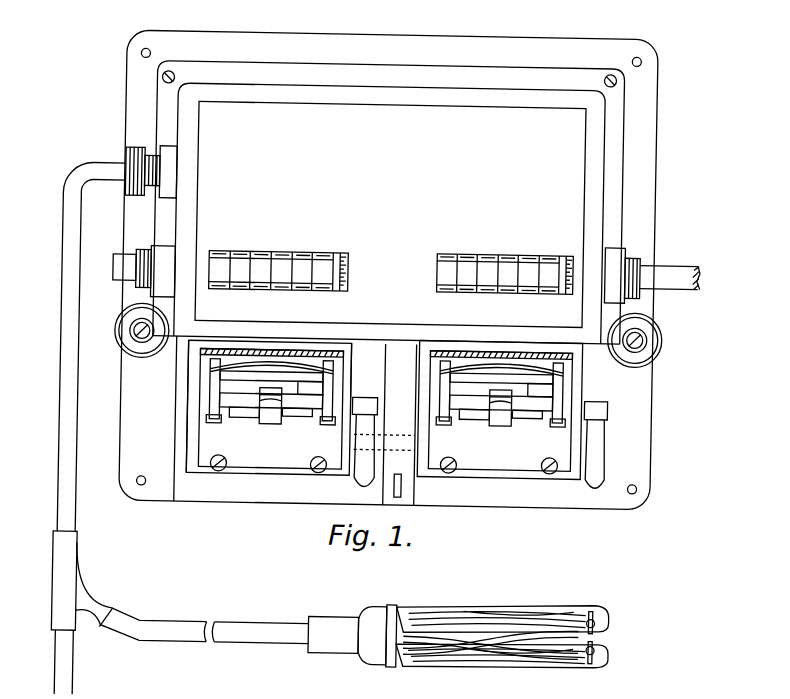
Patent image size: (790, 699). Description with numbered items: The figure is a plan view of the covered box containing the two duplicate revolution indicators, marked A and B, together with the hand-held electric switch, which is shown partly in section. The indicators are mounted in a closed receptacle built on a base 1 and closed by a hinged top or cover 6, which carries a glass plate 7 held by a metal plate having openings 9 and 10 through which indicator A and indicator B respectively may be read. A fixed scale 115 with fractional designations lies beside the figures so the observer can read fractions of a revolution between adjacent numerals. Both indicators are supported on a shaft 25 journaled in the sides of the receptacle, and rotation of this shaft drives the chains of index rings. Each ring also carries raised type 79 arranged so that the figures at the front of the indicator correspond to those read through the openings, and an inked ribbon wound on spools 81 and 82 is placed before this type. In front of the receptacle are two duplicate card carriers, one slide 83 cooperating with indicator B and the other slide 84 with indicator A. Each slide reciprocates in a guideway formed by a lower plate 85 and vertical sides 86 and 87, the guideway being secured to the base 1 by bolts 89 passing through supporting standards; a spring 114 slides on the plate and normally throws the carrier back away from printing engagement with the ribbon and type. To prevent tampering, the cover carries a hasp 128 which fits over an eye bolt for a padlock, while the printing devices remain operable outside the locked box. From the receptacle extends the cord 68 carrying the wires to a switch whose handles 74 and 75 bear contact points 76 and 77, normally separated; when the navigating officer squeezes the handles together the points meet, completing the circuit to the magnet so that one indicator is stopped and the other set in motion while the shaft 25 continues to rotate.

The base 1 is at (345, 40).
The hinged top or cover 6 is at (490, 92).
The glass plate 7 is at (390, 214).
The opening 9 is at (314, 256).
The opening 10 is at (438, 254).
The scale 115 is at (343, 256).
The shaft 25 is at (700, 288).
The cord 68 is at (68, 184).
The raised type 79 is at (236, 620).
The spool 81 is at (133, 348).
The spool 82 is at (646, 346).
The slide 83 is at (520, 360).
The slide 84 is at (285, 352).
The lower plate 85 is at (270, 429).
The vertical side 86 is at (351, 380).
The vertical side 87 is at (192, 410).
The bolt 89 is at (224, 473).
The spring 114 is at (268, 422).
The hasp 128 is at (387, 424).
The switch handle 74 is at (541, 606).
The switch handle 75 is at (590, 660).
The contact point 76 is at (608, 632).
The contact point 77 is at (606, 646).